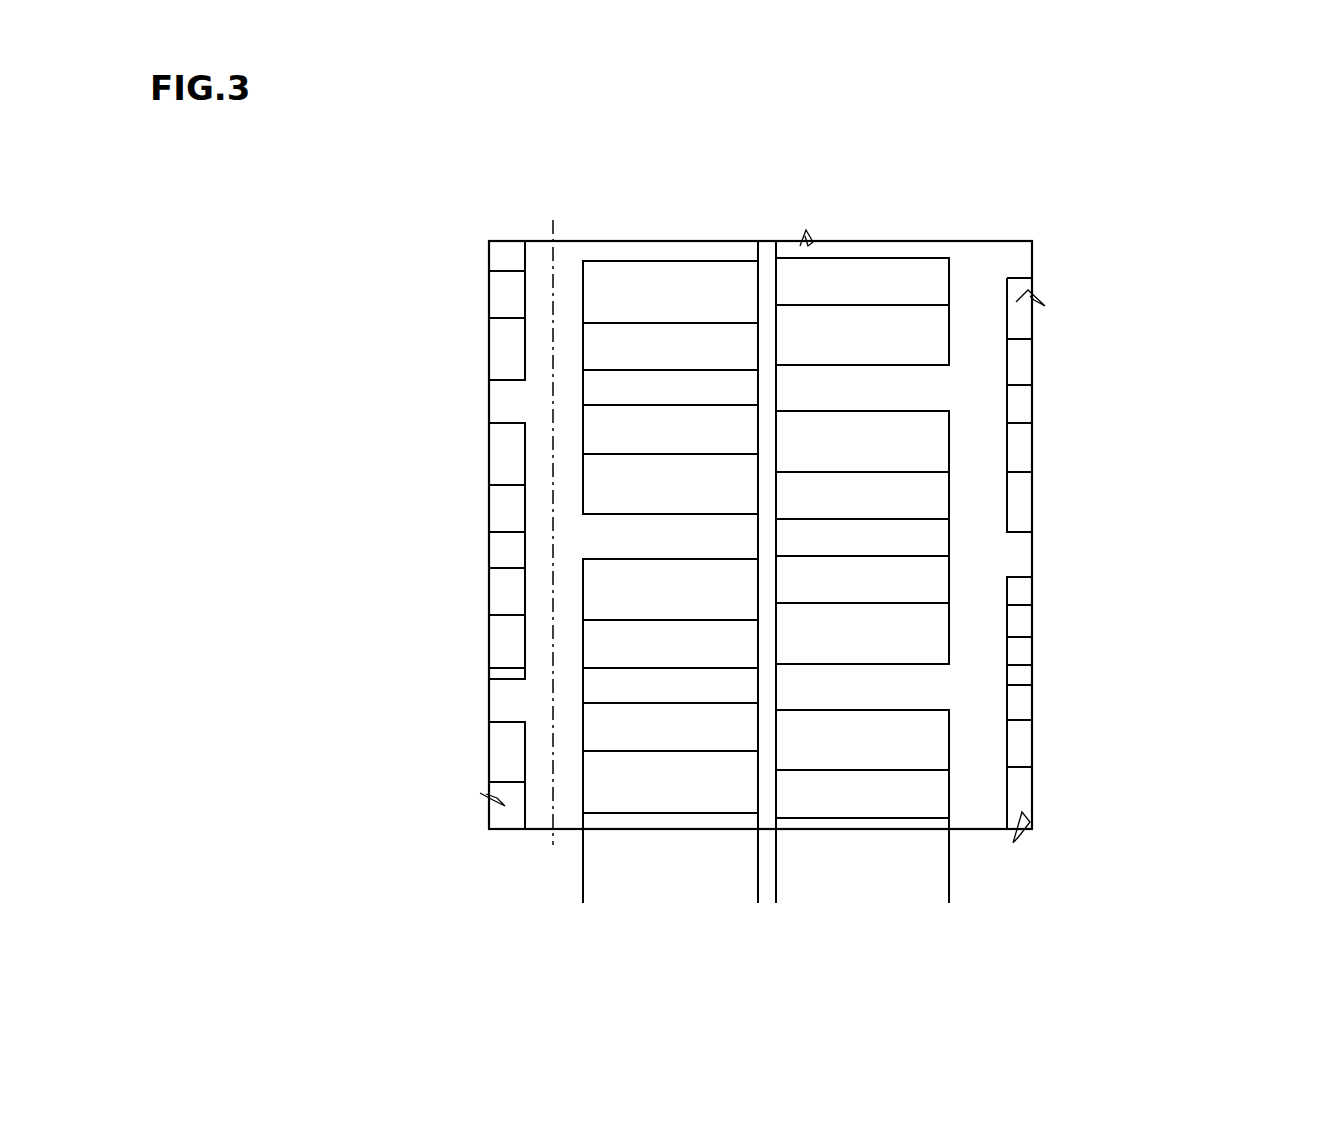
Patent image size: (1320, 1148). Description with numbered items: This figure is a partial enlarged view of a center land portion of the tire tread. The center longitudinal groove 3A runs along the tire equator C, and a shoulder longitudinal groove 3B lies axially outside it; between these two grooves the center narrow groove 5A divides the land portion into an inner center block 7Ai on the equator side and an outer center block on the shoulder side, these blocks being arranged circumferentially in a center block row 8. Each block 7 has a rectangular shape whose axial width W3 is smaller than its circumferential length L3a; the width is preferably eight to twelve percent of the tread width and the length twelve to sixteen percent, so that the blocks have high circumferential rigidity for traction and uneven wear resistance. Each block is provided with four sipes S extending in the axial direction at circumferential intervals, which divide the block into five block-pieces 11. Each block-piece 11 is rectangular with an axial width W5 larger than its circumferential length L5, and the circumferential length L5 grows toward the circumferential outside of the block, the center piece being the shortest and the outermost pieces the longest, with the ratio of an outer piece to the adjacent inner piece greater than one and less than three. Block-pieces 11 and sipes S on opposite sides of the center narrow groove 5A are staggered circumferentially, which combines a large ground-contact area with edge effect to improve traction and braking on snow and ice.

The center longitudinal groove 3A is at (543, 278).
The shoulder longitudinal groove 3B is at (978, 283).
The center narrow groove 5A is at (764, 278).
The tire equator C is at (553, 549).
The center block row 8 is at (685, 283).
The axial width of block-piece W5 is at (758, 295).
The block 7 is at (630, 578).
The inner center block 7Ai is at (620, 482).
The block-piece 11 is at (603, 592).
The sipe S is at (600, 323).
The circumferential length of center block L3a is at (489, 813).
The circumferential length of block-piece L5 is at (489, 751).
The axial width of center block W3 is at (583, 897).